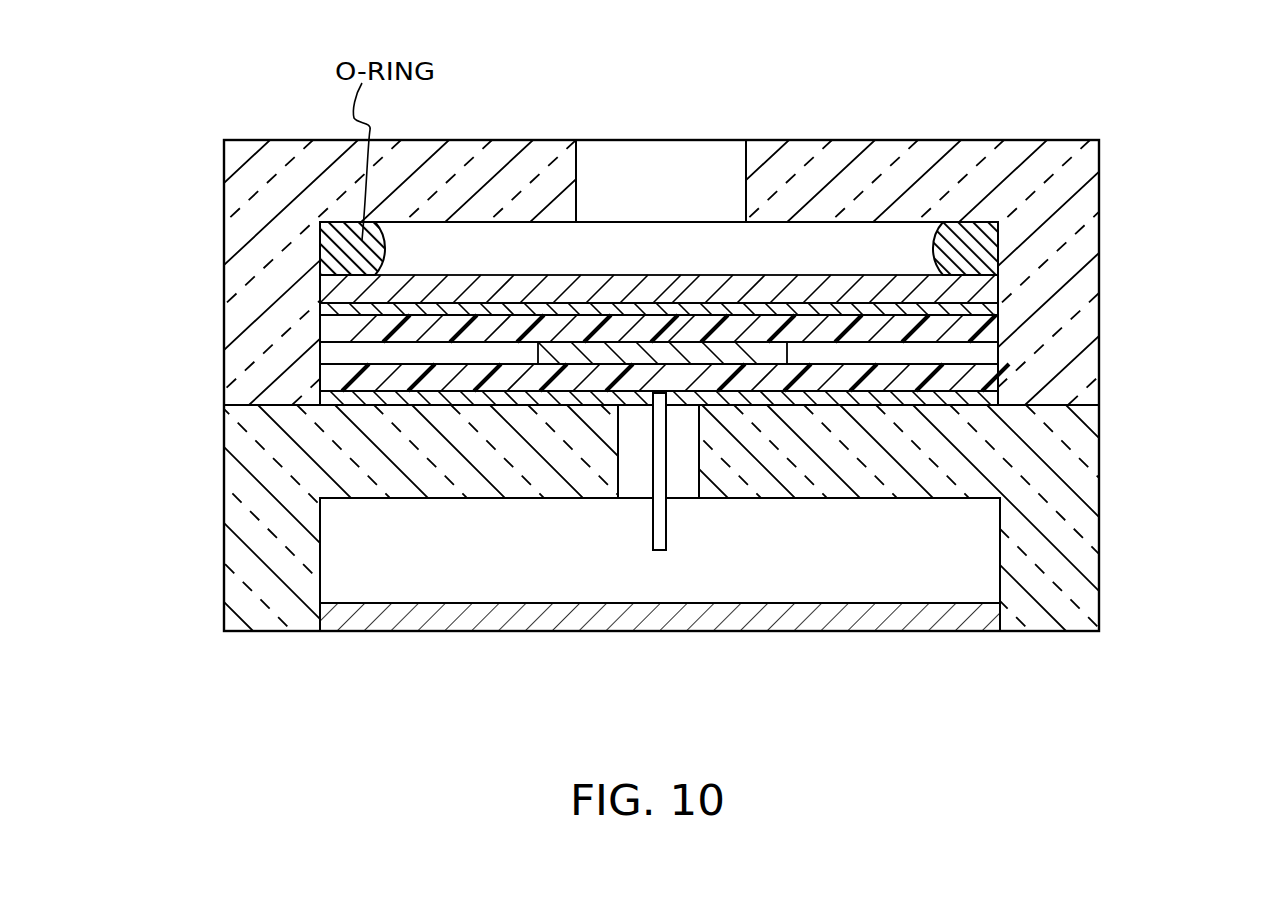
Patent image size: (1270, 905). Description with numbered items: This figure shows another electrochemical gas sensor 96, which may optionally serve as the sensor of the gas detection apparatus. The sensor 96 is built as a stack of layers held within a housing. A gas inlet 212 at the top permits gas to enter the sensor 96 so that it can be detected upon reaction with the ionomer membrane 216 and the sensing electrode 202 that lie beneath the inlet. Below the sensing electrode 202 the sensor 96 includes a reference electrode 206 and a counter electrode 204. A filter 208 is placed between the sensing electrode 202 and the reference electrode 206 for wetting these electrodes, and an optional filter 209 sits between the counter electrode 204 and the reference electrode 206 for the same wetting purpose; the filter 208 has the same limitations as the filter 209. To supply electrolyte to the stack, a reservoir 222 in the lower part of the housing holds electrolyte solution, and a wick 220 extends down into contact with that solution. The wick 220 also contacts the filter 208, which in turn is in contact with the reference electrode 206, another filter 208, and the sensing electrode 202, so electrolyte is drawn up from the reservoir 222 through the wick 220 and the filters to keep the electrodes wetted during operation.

The electrochemical gas sensor 96 is at (276, 98).
The sensing electrode 202 is at (763, 312).
The counter electrode 204 is at (318, 399).
The reference electrode 206 is at (763, 353).
The filter 208 is at (950, 327).
The filter 209 is at (967, 379).
The gas inlet 212 is at (680, 163).
The ionomer membrane 216 is at (478, 285).
The wick 220 is at (668, 535).
The reservoir 222 is at (433, 567).